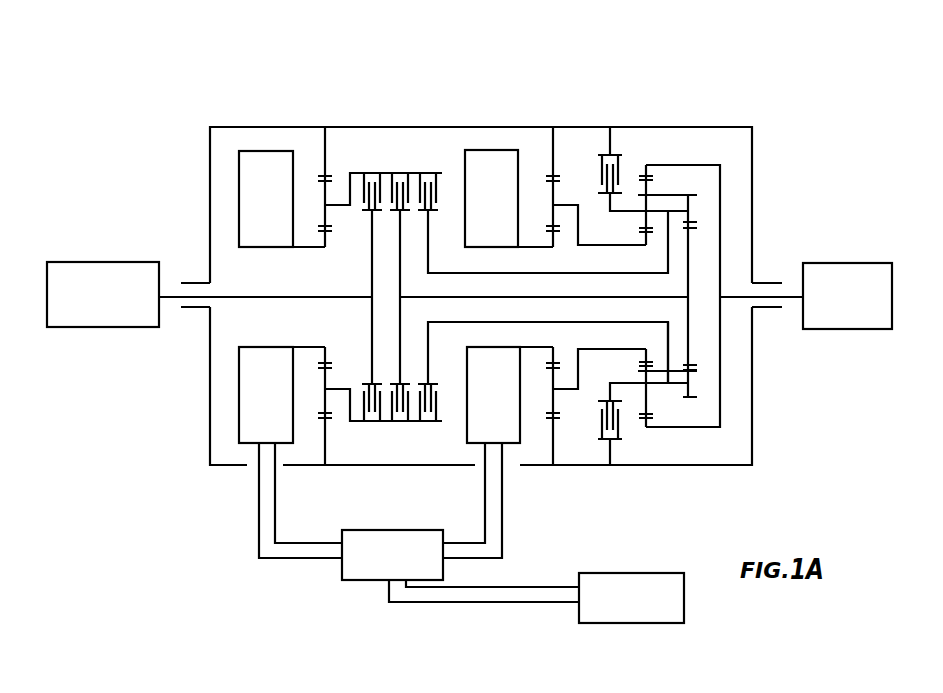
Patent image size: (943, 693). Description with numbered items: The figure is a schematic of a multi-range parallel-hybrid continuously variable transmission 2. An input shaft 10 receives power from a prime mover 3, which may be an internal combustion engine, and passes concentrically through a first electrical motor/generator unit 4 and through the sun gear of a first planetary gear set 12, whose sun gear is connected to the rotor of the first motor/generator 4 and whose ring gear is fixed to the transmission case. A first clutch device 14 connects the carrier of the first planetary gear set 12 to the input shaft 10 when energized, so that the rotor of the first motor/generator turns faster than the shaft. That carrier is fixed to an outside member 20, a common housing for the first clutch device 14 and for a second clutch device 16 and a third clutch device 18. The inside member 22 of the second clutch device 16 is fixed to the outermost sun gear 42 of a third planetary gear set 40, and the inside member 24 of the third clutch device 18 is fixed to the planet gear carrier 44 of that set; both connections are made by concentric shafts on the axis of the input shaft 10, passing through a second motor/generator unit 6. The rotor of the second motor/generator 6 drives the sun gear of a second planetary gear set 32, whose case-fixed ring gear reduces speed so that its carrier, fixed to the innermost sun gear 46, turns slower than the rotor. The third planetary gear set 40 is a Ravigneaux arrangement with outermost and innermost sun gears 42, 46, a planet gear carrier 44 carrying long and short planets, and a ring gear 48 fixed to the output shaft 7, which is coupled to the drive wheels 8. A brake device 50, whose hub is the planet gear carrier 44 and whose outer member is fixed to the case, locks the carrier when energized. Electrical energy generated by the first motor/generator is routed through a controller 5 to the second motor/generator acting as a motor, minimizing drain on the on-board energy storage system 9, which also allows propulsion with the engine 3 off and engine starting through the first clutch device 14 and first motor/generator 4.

The multi-range parallel-hybrid continuously variable transmission 2 is at (183, 493).
The prime mover 3 is at (123, 330).
The first electrical motor/generator unit 4 is at (240, 172).
The controller 5 is at (368, 572).
The second motor/generator unit 6 is at (495, 152).
The output shaft 7 is at (788, 295).
The drive wheels 8 is at (853, 268).
The on-board energy storage system 9 is at (633, 613).
The input shaft 10 is at (252, 302).
The first planetary gear set 12 is at (305, 143).
The first clutch device 14 is at (375, 167).
The second clutch device 16 is at (403, 165).
The third clutch device 18 is at (430, 167).
The outside member 20 is at (383, 427).
The inside member of the second clutch device 22 is at (410, 367).
The inside member of the third clutch device 24 is at (433, 363).
The second planetary gear set 32 is at (565, 140).
The third planetary gear set 40 is at (713, 137).
The outermost sun gear 42 is at (690, 317).
The planet gear carrier 44 is at (673, 350).
The innermost sun gear 46 is at (613, 350).
The ring gear 48 is at (722, 359).
The brake device 50 is at (617, 152).